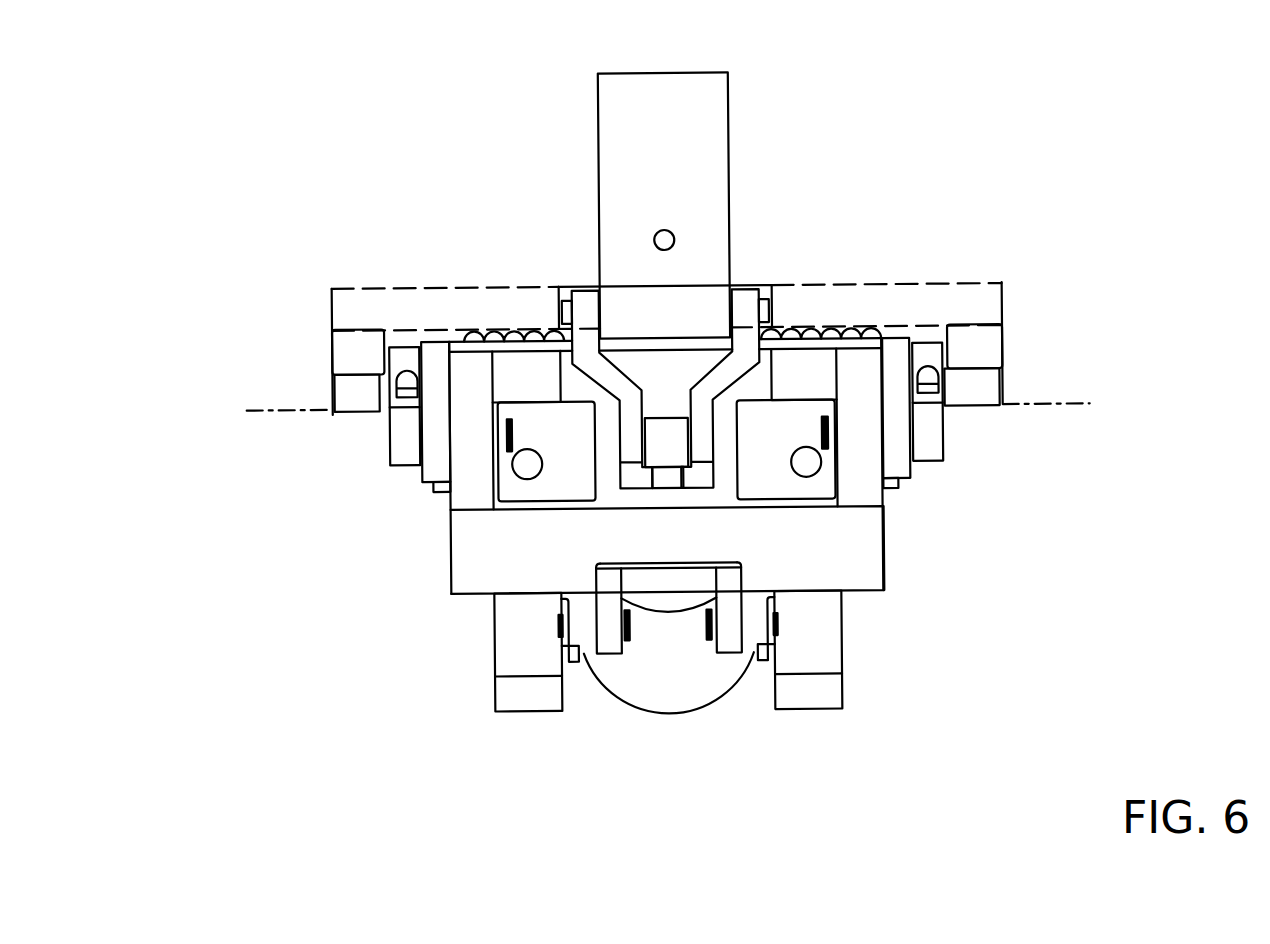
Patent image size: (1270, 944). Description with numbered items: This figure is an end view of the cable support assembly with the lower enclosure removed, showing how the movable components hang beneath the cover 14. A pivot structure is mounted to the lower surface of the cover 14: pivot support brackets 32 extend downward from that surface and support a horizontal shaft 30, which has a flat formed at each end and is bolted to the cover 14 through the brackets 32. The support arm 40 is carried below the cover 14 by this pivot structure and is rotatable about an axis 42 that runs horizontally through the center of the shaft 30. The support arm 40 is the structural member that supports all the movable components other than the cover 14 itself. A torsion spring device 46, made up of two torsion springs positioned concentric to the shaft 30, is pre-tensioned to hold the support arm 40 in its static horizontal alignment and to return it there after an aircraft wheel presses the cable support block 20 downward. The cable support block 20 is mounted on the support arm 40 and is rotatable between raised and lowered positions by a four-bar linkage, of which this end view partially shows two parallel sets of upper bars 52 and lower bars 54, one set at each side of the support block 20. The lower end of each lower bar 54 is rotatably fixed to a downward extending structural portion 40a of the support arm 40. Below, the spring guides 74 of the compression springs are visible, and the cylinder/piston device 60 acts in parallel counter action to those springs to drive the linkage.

The cover 14 is at (1003, 302).
The cable support block 20 is at (712, 73).
The horizontal shaft 30 is at (990, 408).
The pivot support brackets 32 is at (333, 357).
The support arm 40 is at (532, 350).
The downward extending structural portion 40a is at (883, 537).
The axis 42 is at (247, 407).
The torsion spring device 46 is at (478, 332).
The upper bar 52 is at (583, 290).
The lower bar 54 is at (607, 483).
The cylinder/piston device 60 is at (687, 712).
The spring guide 74 is at (493, 652).